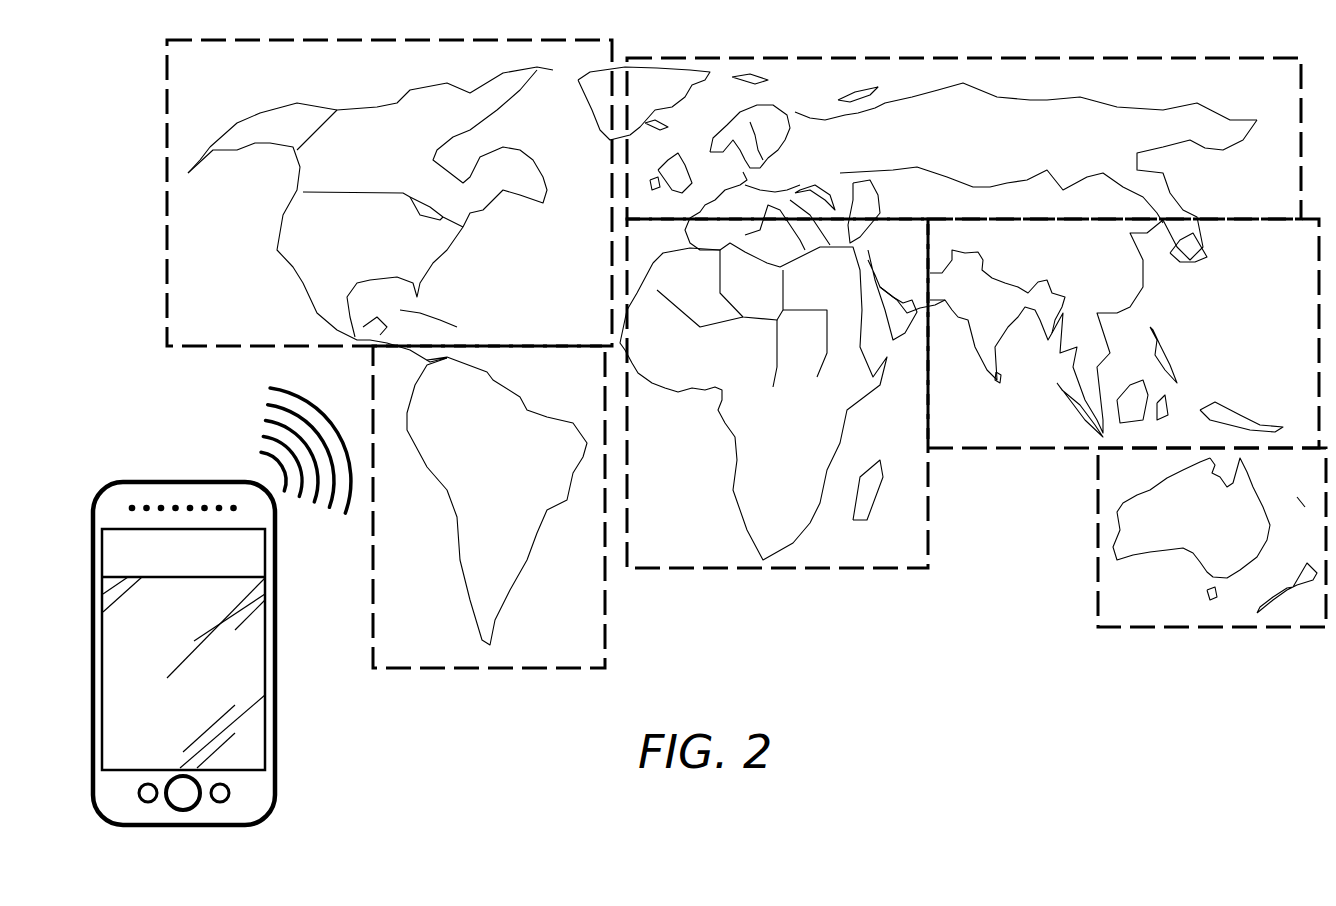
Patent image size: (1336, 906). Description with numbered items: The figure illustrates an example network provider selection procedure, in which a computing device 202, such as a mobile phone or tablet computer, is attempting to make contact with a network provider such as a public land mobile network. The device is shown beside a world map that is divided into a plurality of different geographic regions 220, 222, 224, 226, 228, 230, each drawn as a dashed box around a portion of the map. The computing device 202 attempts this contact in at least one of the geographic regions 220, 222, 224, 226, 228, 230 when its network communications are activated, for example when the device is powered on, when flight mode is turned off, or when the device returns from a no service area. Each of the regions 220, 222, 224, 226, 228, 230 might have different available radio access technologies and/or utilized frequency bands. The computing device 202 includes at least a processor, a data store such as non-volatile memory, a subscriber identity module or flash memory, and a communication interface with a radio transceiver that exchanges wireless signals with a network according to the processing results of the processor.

The computing device 202 is at (99, 485).
The geographic region 220 is at (389, 193).
The geographic region 222 is at (489, 507).
The geographic region 224 is at (777, 393).
The geographic region 226 is at (1212, 537).
The geographic region 228 is at (1123, 333).
The geographic region 230 is at (964, 138).